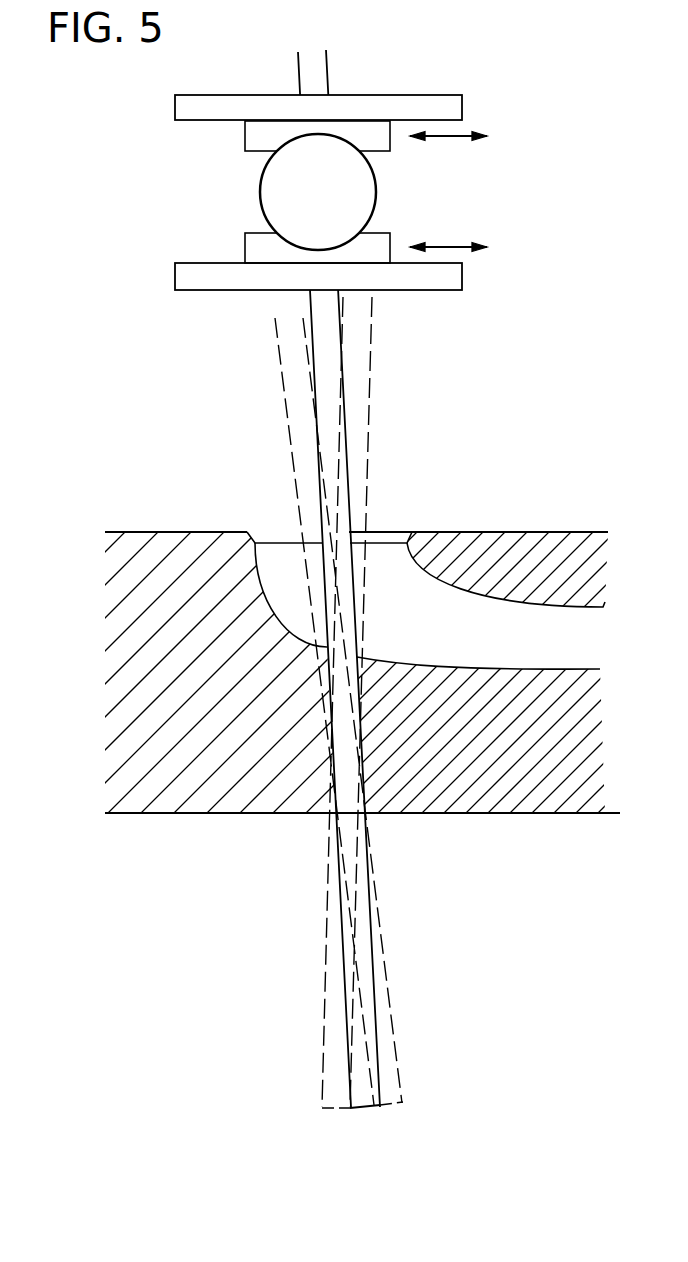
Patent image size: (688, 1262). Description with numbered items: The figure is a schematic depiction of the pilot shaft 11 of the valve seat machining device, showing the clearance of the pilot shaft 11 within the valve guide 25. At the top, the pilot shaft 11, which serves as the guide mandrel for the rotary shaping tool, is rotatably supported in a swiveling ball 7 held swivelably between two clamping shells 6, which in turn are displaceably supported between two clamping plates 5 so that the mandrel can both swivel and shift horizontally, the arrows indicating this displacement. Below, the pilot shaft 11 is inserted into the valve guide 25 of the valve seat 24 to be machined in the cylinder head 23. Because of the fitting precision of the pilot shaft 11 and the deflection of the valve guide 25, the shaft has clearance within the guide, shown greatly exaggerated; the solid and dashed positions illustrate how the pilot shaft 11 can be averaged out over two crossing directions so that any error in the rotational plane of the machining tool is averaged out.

The clamping plate 5 is at (187, 107).
The clamping shell 6 is at (260, 133).
The swiveling ball 7 is at (287, 192).
The pilot shaft 11 is at (327, 70).
The cylinder head 23 is at (196, 575).
The valve seat 24 is at (265, 538).
The valve guide 25 is at (360, 742).